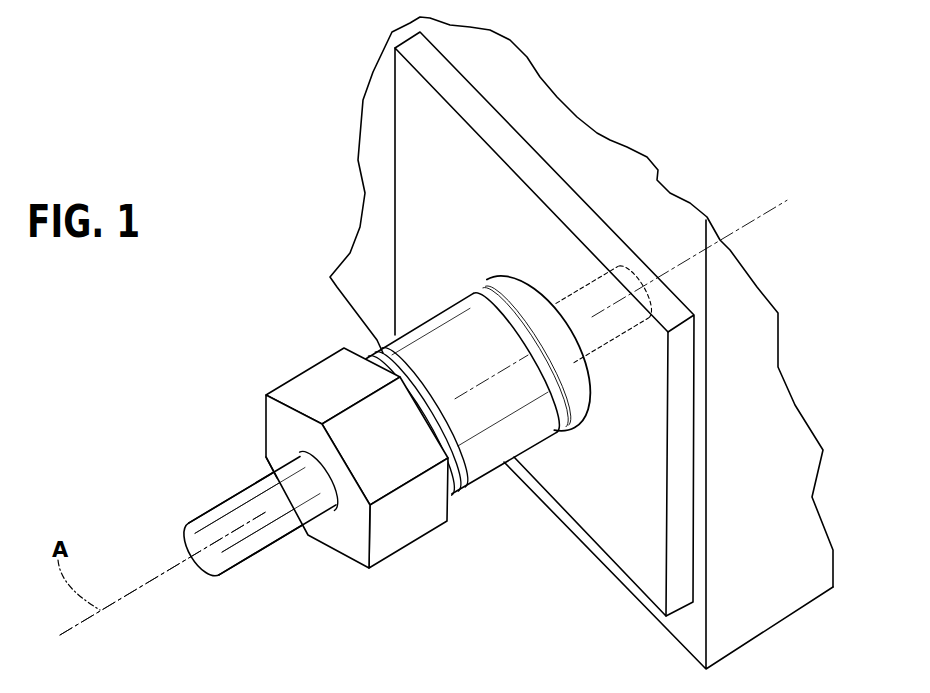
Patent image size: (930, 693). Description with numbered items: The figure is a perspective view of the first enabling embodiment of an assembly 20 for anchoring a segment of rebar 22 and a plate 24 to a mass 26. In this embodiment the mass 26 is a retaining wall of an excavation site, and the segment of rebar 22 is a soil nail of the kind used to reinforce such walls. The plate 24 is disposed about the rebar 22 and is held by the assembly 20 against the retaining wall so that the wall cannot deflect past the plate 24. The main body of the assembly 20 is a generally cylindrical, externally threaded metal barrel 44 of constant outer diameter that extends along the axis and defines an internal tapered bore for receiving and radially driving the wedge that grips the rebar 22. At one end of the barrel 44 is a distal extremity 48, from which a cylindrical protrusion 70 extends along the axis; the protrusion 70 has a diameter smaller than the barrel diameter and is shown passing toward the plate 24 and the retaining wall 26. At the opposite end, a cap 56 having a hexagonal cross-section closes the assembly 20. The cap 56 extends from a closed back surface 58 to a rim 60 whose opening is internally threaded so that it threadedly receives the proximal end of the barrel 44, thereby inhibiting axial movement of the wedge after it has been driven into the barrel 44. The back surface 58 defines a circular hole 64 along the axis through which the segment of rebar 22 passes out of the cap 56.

The assembly 20 is at (105, 400).
The segment of rebar 22 is at (230, 510).
The plate 24 is at (400, 202).
The mass 26 is at (778, 573).
The barrel 44 is at (490, 490).
The distal extremity 48 is at (532, 337).
The cap 56 is at (327, 459).
The back surface 58 is at (357, 550).
The rim 60 is at (360, 352).
The hole 64 is at (285, 458).
The protrusion 70 is at (502, 310).